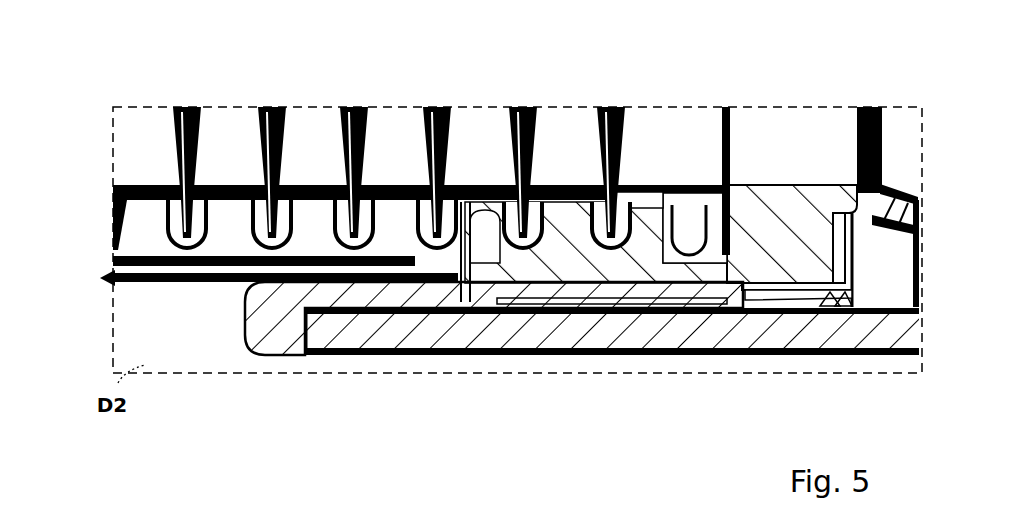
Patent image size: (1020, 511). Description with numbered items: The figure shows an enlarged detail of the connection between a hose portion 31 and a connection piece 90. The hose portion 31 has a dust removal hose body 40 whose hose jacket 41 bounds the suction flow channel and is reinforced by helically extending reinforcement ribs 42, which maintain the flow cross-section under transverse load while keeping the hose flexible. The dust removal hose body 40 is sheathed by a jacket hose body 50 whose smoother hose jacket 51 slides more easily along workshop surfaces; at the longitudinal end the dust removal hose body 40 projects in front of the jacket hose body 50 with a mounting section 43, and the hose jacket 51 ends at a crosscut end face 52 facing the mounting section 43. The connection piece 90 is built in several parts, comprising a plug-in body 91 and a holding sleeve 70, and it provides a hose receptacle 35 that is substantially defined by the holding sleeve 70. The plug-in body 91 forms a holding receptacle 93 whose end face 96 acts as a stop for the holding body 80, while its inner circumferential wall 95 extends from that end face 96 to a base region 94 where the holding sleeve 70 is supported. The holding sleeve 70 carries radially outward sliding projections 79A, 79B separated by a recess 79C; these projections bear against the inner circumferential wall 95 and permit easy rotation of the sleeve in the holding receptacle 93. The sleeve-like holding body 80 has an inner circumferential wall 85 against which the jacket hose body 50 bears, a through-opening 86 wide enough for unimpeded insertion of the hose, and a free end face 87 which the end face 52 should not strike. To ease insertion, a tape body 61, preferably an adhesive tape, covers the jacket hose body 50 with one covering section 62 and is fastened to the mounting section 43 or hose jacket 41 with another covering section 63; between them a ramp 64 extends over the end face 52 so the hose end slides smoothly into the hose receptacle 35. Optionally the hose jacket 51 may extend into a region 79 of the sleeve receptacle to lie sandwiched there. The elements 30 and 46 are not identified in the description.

The connector housing 30 is at (838, 100).
The hose portion 31 is at (187, 107).
The hose receptacle 35 is at (673, 192).
The dust removal hose body 40 is at (106, 118).
The hose jacket 41 is at (113, 192).
The reinforcement ribs 42 is at (355, 107).
The mounting section 43 is at (703, 198).
The contact pins 46 is at (525, 107).
The jacket hose body 50 is at (108, 280).
The hose jacket 51 is at (113, 262).
The end face 52 is at (412, 200).
The tape body 61 is at (476, 207).
The covering section 62 is at (336, 285).
The covering section 63 is at (598, 302).
The ramp 64 is at (478, 285).
The holding sleeve 70 is at (524, 288).
The region 79 is at (520, 302).
The sliding projection 79A is at (488, 302).
The sliding projection 79B is at (842, 300).
The recess 79C is at (615, 300).
The holding body 80 is at (235, 312).
The inner circumferential wall 85 is at (425, 300).
The through-opening 86 is at (246, 322).
The free end face 87 is at (244, 330).
The connection piece 90 is at (666, 360).
The plug-in body 91 is at (832, 330).
The holding receptacle 93 is at (440, 290).
The base region 94 is at (873, 200).
The inner circumferential wall 95 is at (745, 300).
The end face 96 is at (276, 354).